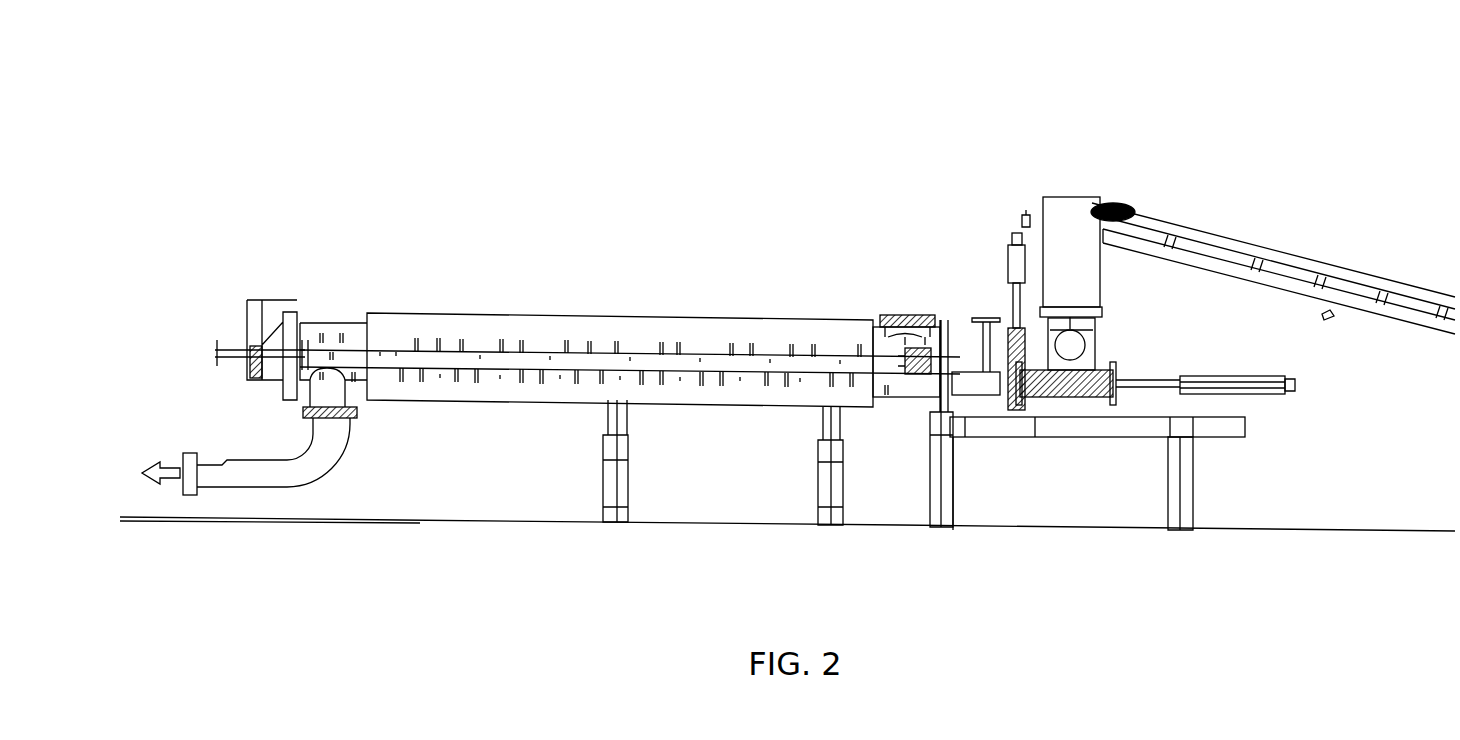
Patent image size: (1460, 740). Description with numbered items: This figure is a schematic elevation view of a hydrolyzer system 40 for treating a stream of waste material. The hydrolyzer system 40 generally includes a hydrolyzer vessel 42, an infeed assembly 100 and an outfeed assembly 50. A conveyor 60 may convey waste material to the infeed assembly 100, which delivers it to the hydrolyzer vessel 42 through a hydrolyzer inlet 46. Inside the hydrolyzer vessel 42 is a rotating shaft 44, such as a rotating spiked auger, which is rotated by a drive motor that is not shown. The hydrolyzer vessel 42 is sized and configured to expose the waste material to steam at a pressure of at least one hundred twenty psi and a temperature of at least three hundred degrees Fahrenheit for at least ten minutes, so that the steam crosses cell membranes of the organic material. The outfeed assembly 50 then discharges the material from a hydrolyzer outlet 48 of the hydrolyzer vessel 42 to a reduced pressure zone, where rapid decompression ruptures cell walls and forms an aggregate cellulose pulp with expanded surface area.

The hydrolyzer system 40 is at (972, 42).
The hydrolyzer vessel 42 is at (665, 300).
The rotating shaft 44 is at (482, 362).
The hydrolyzer inlet 46 is at (940, 355).
The hydrolyzer outlet 48 is at (362, 421).
The outfeed assembly 50 is at (257, 427).
The conveyor 60 is at (1238, 228).
The infeed assembly 100 is at (995, 290).